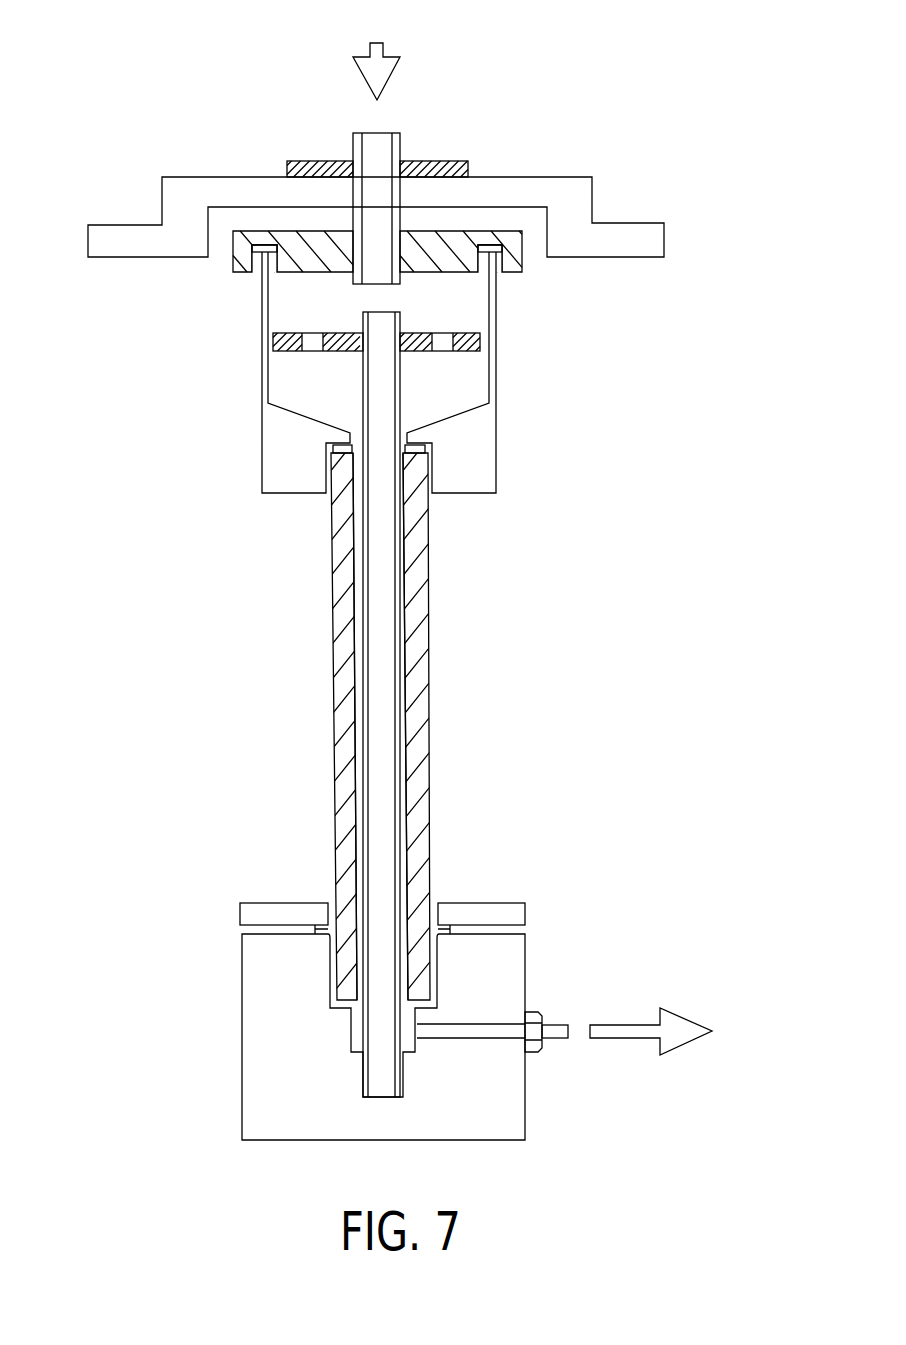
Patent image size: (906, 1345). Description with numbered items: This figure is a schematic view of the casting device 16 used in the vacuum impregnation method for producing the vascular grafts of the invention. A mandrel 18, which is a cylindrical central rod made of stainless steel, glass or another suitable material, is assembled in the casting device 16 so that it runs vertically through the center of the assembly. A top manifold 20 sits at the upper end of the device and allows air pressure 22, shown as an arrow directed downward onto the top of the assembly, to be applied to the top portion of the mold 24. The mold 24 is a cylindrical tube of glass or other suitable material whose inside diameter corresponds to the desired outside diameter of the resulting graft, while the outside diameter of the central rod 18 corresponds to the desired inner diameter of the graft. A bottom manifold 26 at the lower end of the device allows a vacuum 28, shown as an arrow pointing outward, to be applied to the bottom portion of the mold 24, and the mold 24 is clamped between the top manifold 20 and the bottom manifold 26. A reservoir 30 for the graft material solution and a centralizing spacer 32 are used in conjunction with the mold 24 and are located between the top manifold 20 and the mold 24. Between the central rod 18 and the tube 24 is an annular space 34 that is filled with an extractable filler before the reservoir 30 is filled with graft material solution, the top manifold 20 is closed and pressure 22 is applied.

The casting device 16 is at (155, 787).
The mandrel 18 is at (382, 598).
The top manifold 20 is at (580, 246).
The air pressure 22 is at (376, 52).
The mold 24 is at (427, 657).
The bottom manifold 26 is at (527, 1103).
The vacuum 28 is at (589, 1031).
The reservoir 30 is at (465, 400).
The centralizing spacer 32 is at (482, 343).
The annular space 34 is at (403, 730).